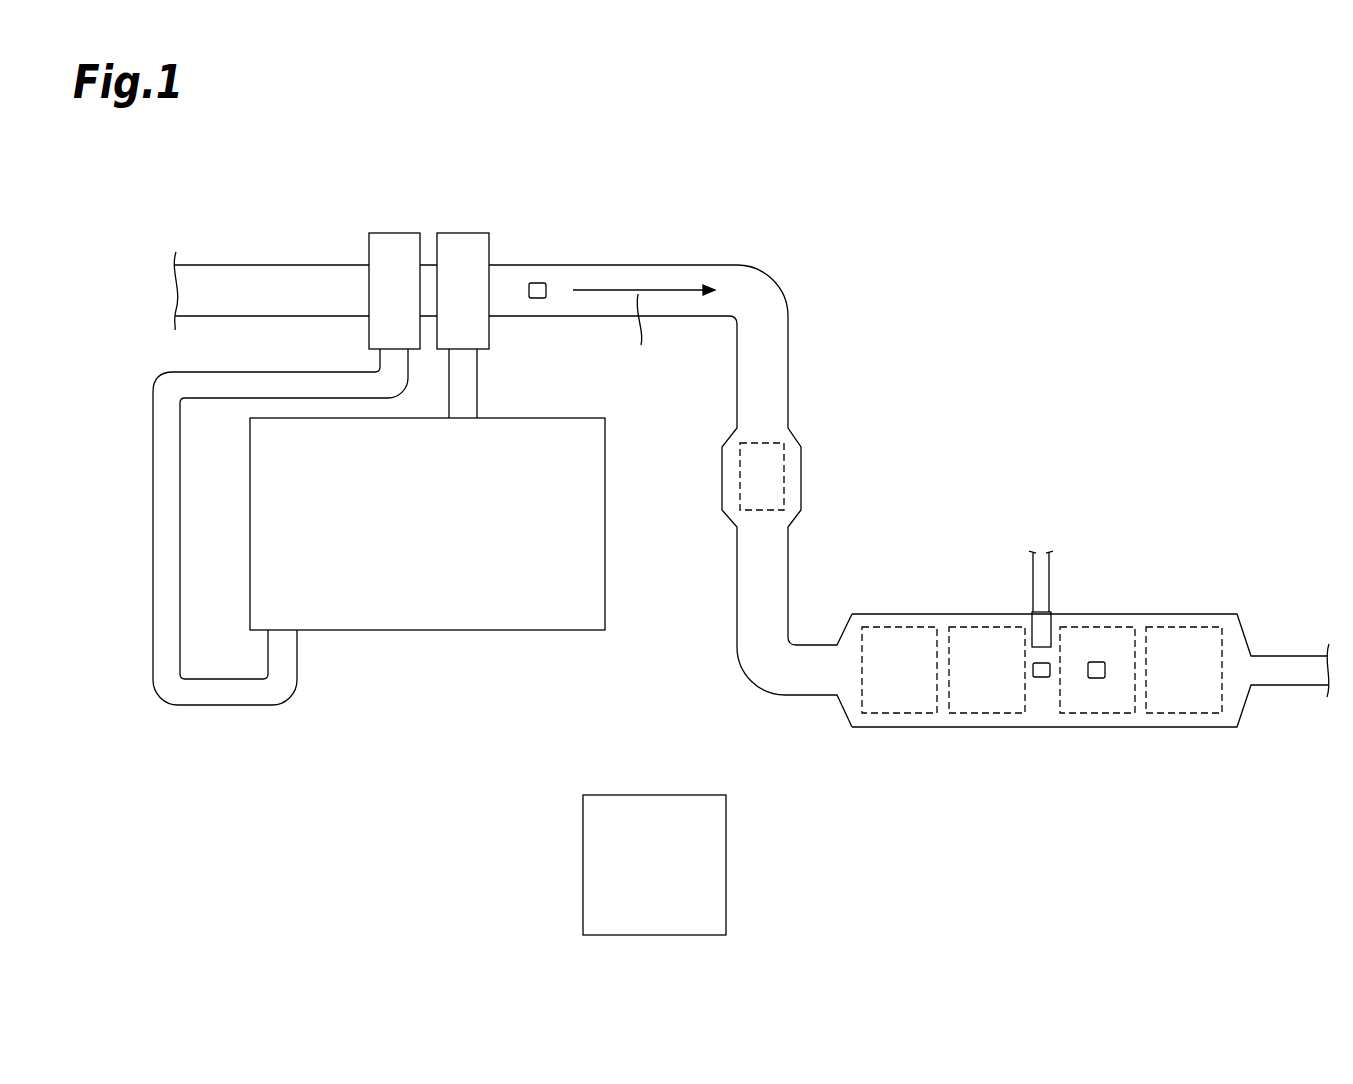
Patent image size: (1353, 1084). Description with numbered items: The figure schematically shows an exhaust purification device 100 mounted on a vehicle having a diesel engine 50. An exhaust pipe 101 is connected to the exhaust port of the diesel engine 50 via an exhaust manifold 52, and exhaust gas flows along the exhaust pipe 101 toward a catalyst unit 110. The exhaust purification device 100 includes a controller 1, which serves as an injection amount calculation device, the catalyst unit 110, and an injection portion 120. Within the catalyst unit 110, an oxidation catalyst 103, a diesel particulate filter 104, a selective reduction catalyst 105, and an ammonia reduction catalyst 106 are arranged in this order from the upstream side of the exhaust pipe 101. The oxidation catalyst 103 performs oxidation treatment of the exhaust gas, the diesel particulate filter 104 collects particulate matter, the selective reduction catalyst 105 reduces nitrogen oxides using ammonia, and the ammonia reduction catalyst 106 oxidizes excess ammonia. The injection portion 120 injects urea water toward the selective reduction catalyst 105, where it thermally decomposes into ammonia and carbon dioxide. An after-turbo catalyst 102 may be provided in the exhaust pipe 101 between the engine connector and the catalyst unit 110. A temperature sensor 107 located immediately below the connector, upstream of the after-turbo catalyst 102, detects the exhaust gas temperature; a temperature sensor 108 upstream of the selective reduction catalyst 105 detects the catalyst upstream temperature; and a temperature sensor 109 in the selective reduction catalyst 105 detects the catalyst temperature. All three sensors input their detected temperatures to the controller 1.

The controller 1 is at (582, 862).
The diesel engine 50 is at (415, 632).
The exhaust manifold 52 is at (478, 383).
The exhaust purification device 100 is at (1082, 376).
The exhaust pipe 101 is at (666, 276).
The after-turbo catalyst 102 is at (799, 466).
The oxidation catalyst 103 is at (895, 627).
The diesel particulate filter 104 is at (985, 627).
The selective reduction catalyst 105 is at (1103, 627).
The ammonia reduction catalyst 106 is at (1191, 627).
The temperature sensor 107 is at (540, 282).
The temperature sensor 108 is at (1041, 680).
The temperature sensor 109 is at (1096, 680).
The catalyst unit 110 is at (950, 730).
The injection portion 120 is at (1046, 626).